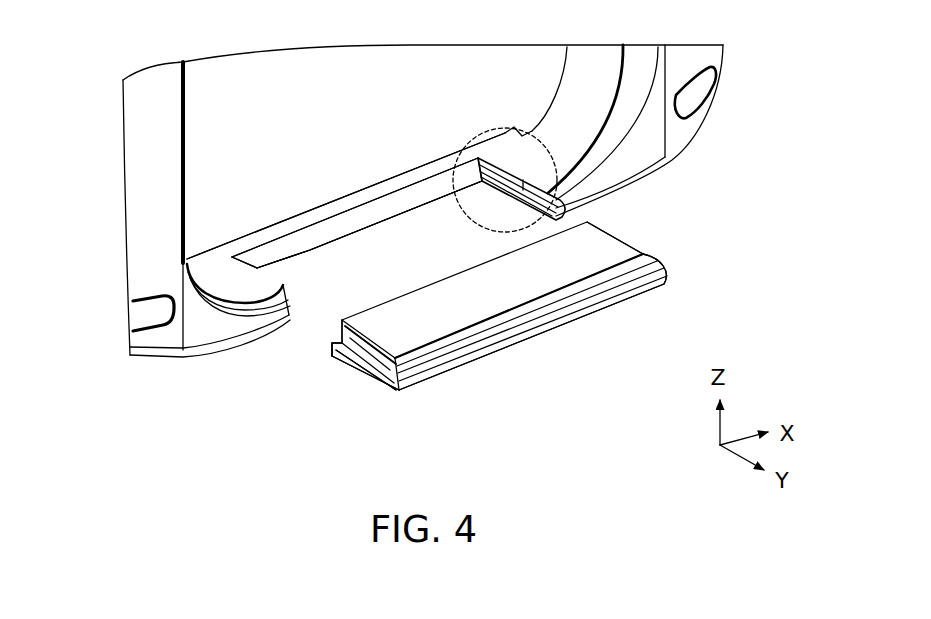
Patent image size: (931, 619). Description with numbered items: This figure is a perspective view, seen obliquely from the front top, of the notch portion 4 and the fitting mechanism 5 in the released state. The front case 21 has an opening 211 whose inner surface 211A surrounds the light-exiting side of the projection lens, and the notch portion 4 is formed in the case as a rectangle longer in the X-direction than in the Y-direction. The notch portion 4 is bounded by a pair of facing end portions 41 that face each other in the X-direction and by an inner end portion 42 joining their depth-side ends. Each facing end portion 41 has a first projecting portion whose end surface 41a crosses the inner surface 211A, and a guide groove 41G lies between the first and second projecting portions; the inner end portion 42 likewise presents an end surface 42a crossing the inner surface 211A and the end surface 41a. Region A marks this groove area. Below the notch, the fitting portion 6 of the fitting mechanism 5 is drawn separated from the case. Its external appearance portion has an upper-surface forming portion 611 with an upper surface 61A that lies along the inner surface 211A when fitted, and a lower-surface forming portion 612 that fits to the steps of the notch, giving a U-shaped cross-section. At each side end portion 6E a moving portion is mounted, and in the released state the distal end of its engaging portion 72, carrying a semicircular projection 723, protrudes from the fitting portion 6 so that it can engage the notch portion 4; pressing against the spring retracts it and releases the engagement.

The front case 21 is at (138, 213).
The opening 211 is at (218, 280).
The inner surface 211A is at (507, 134).
The notch portion 4 is at (413, 224).
The facing end portions 41 is at (284, 282).
The end surface 41a is at (257, 268).
The guide groove 41G is at (548, 216).
The inner end portion 42 is at (369, 241).
The end surface 42a is at (343, 220).
The fitting mechanism 5 is at (598, 374).
The fitting portion 6 is at (507, 318).
The upper surface 61A is at (596, 247).
The side end portions 6E is at (666, 247).
The upper-surface forming portion 611 is at (336, 340).
The lower-surface forming portion 612 is at (332, 354).
The engaging portion 72 is at (372, 378).
The projection 723 is at (350, 367).
The region A is at (458, 136).